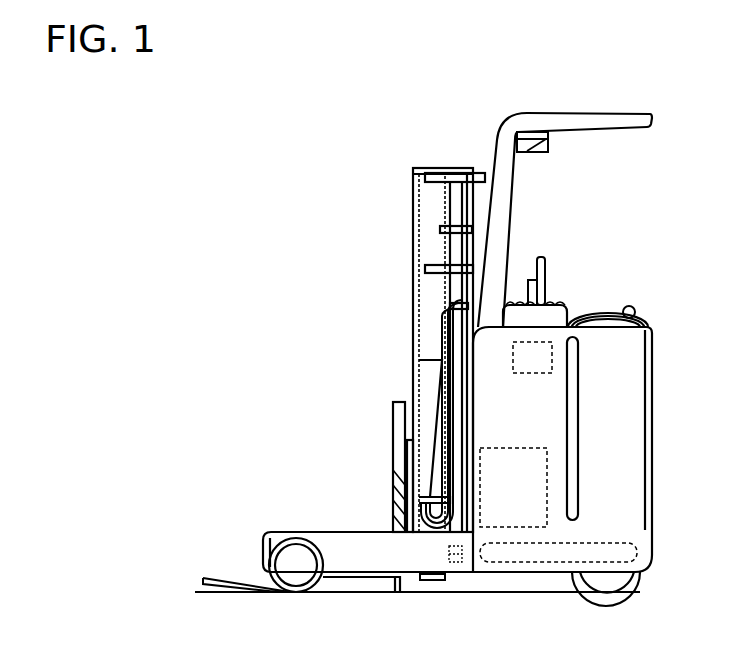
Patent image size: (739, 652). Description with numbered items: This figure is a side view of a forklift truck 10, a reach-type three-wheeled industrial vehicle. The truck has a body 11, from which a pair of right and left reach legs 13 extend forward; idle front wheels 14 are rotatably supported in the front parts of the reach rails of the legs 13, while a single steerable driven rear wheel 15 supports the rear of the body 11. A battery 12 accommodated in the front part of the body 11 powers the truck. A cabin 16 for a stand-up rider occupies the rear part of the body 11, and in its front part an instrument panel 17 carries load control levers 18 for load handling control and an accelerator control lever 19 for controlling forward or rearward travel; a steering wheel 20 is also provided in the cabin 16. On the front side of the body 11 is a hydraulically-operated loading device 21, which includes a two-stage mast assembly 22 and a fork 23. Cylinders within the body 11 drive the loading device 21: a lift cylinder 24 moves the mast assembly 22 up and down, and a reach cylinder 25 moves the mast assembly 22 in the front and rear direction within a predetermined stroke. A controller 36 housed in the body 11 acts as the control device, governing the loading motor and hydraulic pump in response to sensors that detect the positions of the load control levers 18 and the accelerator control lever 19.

The forklift truck 10 is at (364, 110).
The body 11 is at (652, 420).
The battery 12 is at (515, 447).
The reach legs 13 is at (355, 530).
The front wheel 14 is at (298, 578).
The rear wheel 15 is at (612, 578).
The cabin 16 is at (644, 218).
The instrument panel 17 is at (560, 305).
The load control levers 18 is at (545, 258).
The accelerator control lever 19 is at (530, 282).
The steering wheel 20 is at (636, 310).
The loading device 21 is at (376, 189).
The mast assembly 22 is at (420, 245).
The fork 23 is at (242, 582).
The lift cylinder 24 is at (453, 285).
The reach cylinder 25 is at (533, 568).
The controller 36 is at (525, 375).